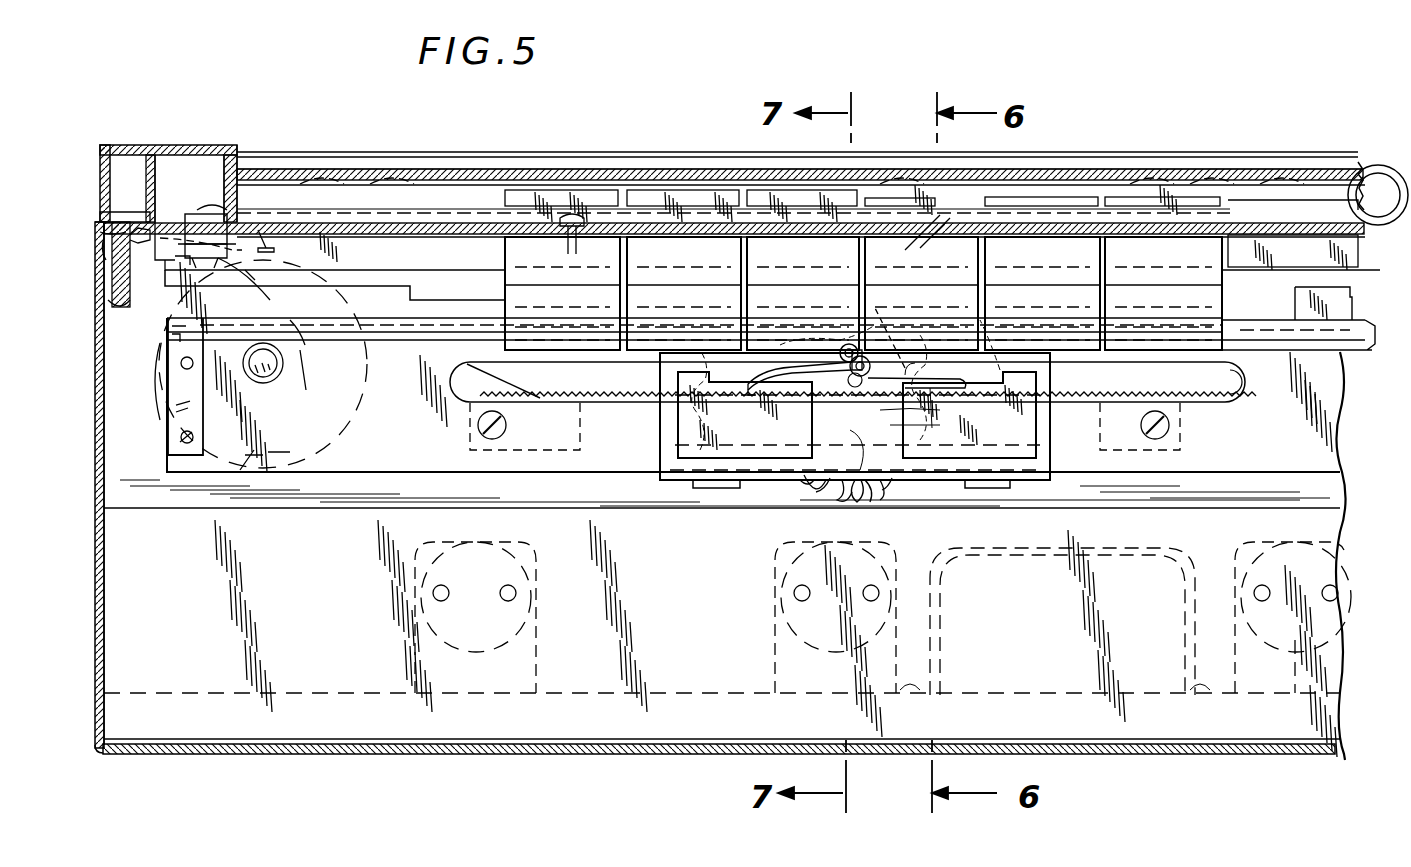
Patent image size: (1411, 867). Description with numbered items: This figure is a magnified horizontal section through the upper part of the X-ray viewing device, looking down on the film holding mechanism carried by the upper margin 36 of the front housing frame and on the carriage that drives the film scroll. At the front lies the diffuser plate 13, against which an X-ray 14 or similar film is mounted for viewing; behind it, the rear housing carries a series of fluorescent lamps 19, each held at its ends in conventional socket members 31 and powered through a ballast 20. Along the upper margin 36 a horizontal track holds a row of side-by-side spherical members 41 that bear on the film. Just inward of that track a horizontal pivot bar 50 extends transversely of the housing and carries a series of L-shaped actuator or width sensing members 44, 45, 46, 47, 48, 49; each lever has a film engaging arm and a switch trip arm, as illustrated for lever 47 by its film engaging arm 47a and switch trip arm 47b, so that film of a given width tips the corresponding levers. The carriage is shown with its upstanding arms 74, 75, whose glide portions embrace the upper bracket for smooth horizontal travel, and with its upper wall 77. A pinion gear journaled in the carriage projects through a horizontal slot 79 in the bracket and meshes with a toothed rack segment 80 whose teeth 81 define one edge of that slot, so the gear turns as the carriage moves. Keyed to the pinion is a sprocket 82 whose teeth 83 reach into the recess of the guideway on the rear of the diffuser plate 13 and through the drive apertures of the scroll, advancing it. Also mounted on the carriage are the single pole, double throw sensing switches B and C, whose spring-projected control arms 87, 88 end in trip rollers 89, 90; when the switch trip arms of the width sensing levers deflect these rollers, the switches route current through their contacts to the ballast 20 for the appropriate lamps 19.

The diffuser plate 13 is at (1380, 243).
The X-ray 14 is at (1400, 252).
The fluorescent lamps 19 is at (485, 538).
The ballast 20 is at (982, 549).
The socket members 31 is at (535, 648).
The upper margin 36 is at (335, 163).
The spherical members 41 is at (1390, 170).
The actuator or width sensing member 44 is at (596, 190).
The actuator or width sensing member 45 is at (696, 190).
The actuator or width sensing member 46 is at (804, 190).
The actuator or width sensing member 47 is at (918, 196).
The film engaging arm 47a is at (922, 247).
The switch trip arm 47b is at (922, 352).
The actuator or width sensing member 48 is at (1050, 210).
The actuator or width sensing member 49 is at (1178, 213).
The horizontal pivot bar 50 is at (1338, 223).
The upstanding arm 74 is at (1043, 342).
The upstanding arm 75 is at (1025, 480).
The upper wall 77 is at (846, 480).
The horizontal slot 79 is at (1244, 384).
The toothed rack segment 80 is at (470, 376).
The teeth 81 is at (560, 396).
The sprocket 82 is at (803, 492).
The teeth 83 is at (892, 487).
The control arm 87 is at (790, 373).
The control arm 88 is at (920, 397).
The trip roller 89 is at (853, 345).
The trip roller 90 is at (868, 372).
The sensing switch B is at (1003, 416).
The sensing switch C is at (686, 427).